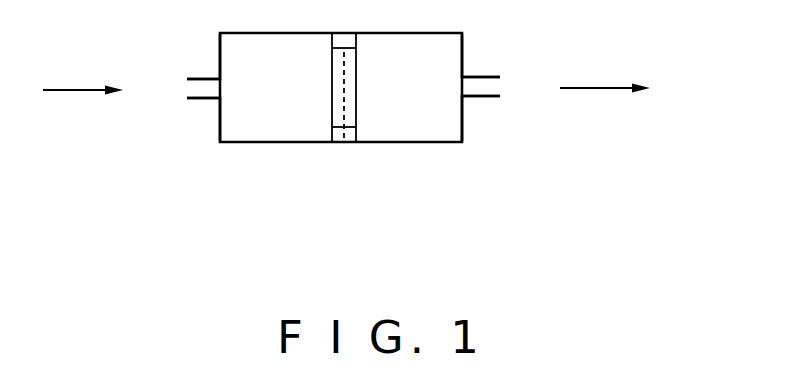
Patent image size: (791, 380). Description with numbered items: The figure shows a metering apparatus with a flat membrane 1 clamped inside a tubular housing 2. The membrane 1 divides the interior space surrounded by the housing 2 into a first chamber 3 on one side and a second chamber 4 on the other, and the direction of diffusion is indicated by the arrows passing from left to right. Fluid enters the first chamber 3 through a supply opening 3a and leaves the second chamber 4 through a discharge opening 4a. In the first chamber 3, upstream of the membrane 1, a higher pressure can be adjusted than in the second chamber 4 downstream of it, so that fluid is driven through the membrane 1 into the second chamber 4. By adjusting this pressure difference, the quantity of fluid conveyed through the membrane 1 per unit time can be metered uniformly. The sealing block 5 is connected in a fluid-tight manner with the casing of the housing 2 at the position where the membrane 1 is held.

The membrane 1 is at (348, 105).
The tubular housing 2 is at (298, 141).
The first chamber 3 is at (248, 123).
The supply opening 3a is at (202, 102).
The second chamber 4 is at (418, 123).
The discharge opening 4a is at (483, 86).
The sealing block 5 is at (345, 133).